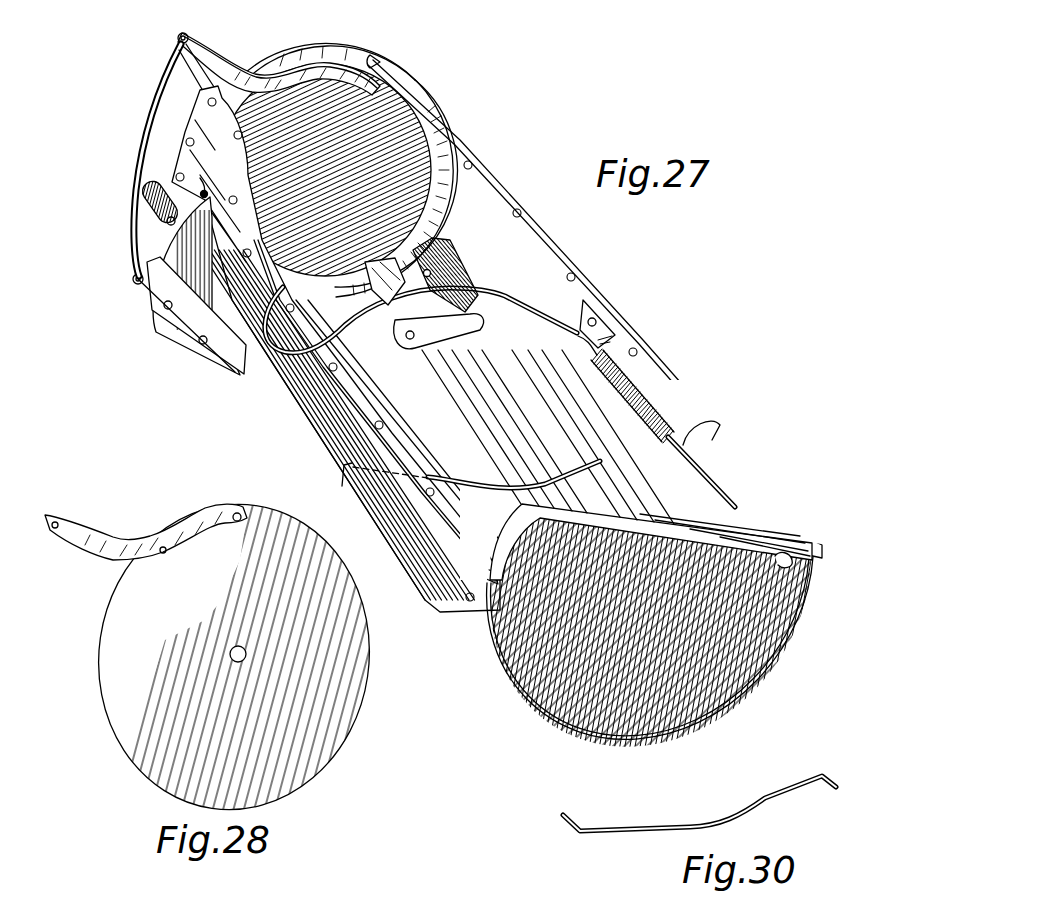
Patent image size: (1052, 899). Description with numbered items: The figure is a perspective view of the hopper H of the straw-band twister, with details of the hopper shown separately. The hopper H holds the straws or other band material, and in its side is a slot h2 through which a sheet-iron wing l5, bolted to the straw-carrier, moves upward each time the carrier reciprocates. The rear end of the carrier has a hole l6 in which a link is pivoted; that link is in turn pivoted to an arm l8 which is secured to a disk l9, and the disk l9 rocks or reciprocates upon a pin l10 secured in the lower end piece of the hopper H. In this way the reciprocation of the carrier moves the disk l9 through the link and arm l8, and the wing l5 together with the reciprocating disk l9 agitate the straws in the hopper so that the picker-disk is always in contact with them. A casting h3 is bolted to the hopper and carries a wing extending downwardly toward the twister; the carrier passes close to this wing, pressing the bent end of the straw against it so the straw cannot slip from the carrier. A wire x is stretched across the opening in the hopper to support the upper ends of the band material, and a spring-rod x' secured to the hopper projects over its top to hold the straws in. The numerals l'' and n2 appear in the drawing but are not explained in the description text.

In FIG. 27, the hole l6 is at (213, 63).
In FIG. 27, the disk l9 is at (410, 93).
In FIG. 28, the disk l9 is at (249, 658).
In FIG. 27, the pin l10 is at (306, 178).
In FIG. 27, the bent rod arm l'' is at (152, 160).
In FIG. 30, the bent rod arm l'' is at (699, 803).
In FIG. 27, the sheet-iron wing l5 is at (158, 304).
In FIG. 28, the arm l8 is at (88, 540).
In FIG. 27, the slot h2 is at (200, 210).
In FIG. 27, the casting h3 is at (423, 243).
In FIG. 27, the hopper H is at (497, 333).
In FIG. 27, the spring-rod x' is at (421, 320).
In FIG. 27, the wire x is at (471, 472).
In FIG. 27, the wedge piece n2 is at (354, 278).